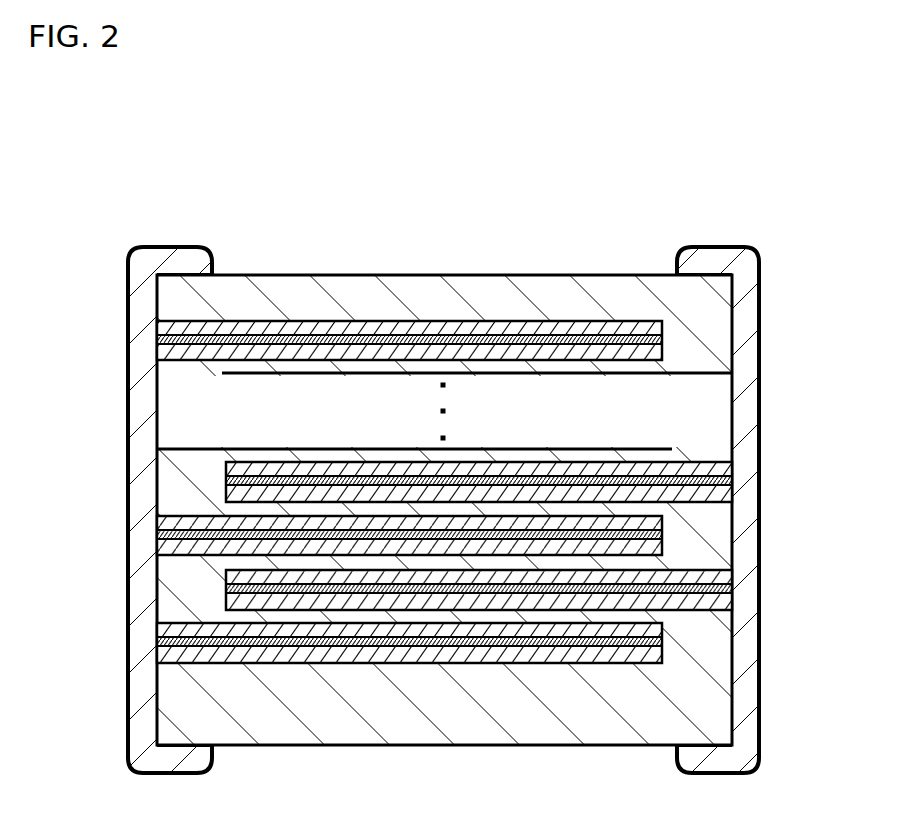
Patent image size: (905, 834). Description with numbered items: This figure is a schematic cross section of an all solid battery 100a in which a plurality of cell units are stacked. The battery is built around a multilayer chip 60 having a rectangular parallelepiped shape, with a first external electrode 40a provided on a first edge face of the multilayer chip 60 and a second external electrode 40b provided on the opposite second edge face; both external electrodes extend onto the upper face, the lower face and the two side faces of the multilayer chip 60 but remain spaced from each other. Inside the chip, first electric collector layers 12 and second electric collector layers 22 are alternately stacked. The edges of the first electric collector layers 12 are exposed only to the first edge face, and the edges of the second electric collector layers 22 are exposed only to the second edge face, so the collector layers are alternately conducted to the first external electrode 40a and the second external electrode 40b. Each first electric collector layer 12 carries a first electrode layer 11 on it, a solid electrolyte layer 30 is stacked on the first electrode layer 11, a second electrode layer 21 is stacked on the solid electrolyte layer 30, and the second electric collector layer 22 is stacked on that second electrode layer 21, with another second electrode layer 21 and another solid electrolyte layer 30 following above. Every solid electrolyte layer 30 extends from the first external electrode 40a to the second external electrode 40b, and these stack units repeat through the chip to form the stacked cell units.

The all solid battery 100a is at (813, 145).
The multilayer chip 60 is at (452, 484).
The first external electrode 40a is at (128, 352).
The second external electrode 40b is at (760, 352).
The solid electrolyte layer 30 is at (333, 618).
The first electrode layer 11 is at (168, 524).
The first electric collector layer 12 is at (166, 538).
The second electrode layer 21 is at (720, 574).
The second electric collector layer 22 is at (722, 590).